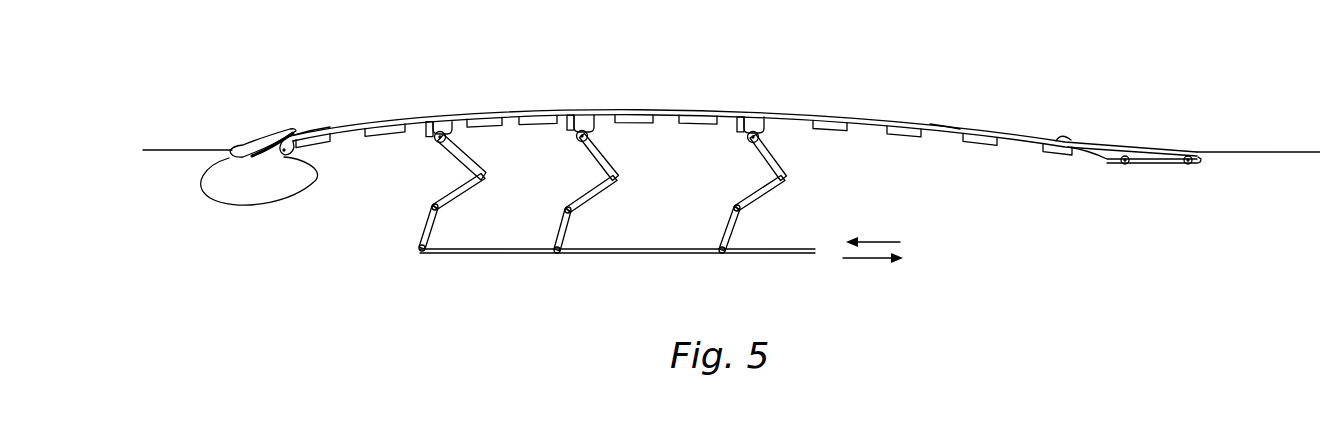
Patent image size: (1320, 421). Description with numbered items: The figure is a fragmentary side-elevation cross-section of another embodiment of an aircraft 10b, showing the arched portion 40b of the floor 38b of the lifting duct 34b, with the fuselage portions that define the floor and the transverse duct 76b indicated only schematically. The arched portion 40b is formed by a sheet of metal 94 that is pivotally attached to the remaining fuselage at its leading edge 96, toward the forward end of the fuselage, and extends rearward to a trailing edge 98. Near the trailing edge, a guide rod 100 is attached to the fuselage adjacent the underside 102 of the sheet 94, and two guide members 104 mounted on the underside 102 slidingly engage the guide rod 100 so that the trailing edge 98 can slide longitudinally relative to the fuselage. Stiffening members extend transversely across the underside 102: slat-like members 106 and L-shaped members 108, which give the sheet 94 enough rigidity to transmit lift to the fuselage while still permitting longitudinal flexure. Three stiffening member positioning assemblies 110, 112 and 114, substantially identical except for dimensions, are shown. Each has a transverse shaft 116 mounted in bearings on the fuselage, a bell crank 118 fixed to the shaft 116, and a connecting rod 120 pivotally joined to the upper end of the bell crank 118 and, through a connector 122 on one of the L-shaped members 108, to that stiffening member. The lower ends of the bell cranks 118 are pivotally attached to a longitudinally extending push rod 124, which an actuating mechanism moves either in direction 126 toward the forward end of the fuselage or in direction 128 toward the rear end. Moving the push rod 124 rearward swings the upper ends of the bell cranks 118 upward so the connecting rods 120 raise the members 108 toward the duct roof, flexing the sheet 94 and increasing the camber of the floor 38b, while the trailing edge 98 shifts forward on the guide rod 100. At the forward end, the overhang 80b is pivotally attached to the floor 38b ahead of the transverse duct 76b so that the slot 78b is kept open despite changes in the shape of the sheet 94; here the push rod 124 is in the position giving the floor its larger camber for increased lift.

The aircraft 10b is at (1284, 206).
The duct 34b is at (545, 45).
The floor 38b is at (172, 149).
The arched portion 40b is at (661, 110).
The transverse duct 76b is at (236, 190).
The slot 78b is at (304, 130).
The overhang 80b is at (259, 140).
The sheet of metal 94 is at (738, 141).
The leading edge 96 is at (281, 158).
The trailing edge 98 is at (1195, 149).
The guide rod 100 is at (1087, 153).
The underside 102 is at (948, 133).
The guide members 104 is at (1190, 164).
The stiffening members 106 is at (386, 135).
The stiffening members 108 is at (434, 121).
The stiffening member positioning assembly 110 is at (714, 241).
The stiffening member positioning assembly 112 is at (549, 240).
The stiffening member positioning assembly 114 is at (416, 230).
The transverse shaft 116 is at (443, 205).
The bell crank 118 is at (462, 192).
The connecting rod 120 is at (463, 158).
The connector 122 is at (452, 126).
The push rod 124 is at (624, 260).
The direction 126 is at (883, 240).
The direction 128 is at (881, 262).